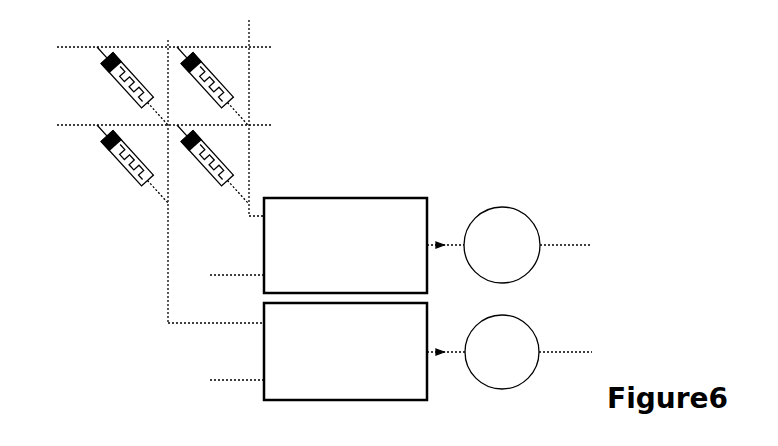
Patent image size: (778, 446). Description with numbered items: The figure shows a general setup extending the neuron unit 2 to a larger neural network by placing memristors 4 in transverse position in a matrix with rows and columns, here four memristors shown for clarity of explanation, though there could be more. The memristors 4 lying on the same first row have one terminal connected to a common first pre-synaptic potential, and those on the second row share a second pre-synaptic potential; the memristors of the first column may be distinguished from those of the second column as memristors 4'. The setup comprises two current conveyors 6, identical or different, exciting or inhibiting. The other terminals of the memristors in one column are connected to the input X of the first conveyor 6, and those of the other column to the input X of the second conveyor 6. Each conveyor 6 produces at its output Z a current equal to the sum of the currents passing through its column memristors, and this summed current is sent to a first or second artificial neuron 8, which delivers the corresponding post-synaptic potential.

The neuron unit 2 is at (437, 125).
The memristor 4 is at (235, 125).
The memristor (first column) 4' is at (132, 132).
The current conveyor 6 is at (335, 198).
The artificial neuron 8 is at (503, 208).